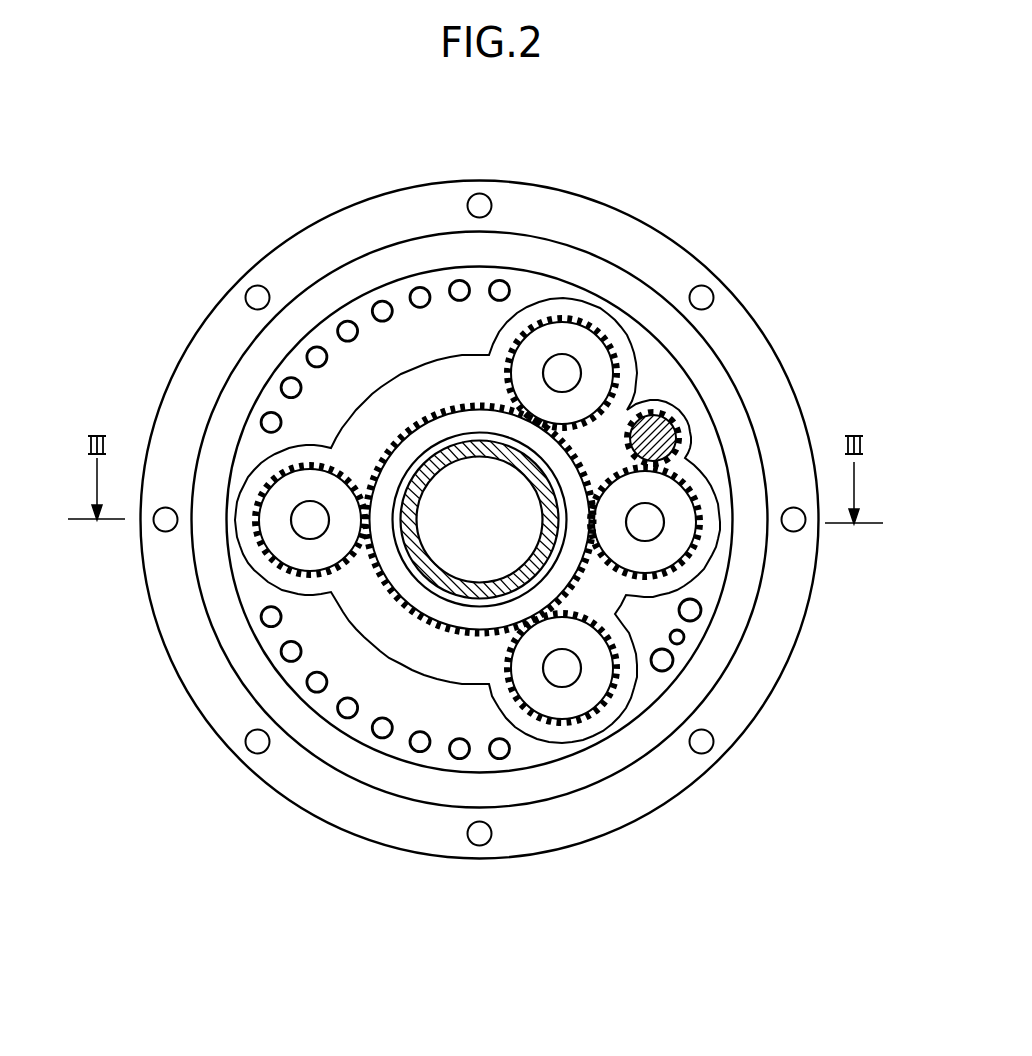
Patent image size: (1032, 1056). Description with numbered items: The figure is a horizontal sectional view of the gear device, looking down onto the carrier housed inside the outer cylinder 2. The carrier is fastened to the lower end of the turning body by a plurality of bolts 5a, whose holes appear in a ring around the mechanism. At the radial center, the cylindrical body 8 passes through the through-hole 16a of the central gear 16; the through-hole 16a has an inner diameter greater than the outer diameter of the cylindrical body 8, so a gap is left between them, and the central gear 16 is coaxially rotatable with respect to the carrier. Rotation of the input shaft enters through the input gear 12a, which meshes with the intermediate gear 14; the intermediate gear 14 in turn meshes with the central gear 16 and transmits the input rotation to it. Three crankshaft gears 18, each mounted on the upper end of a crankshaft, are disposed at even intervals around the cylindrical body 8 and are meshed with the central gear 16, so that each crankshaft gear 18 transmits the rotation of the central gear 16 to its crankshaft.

The outer cylinder 2 is at (817, 563).
The bolts 5a is at (347, 712).
The cylindrical body 8 is at (460, 597).
The input gear 12a is at (687, 433).
The intermediate gear 14 is at (660, 577).
The central gear 16 is at (450, 408).
The through-hole 16a is at (413, 500).
The crankshaft gear 18 is at (587, 318).